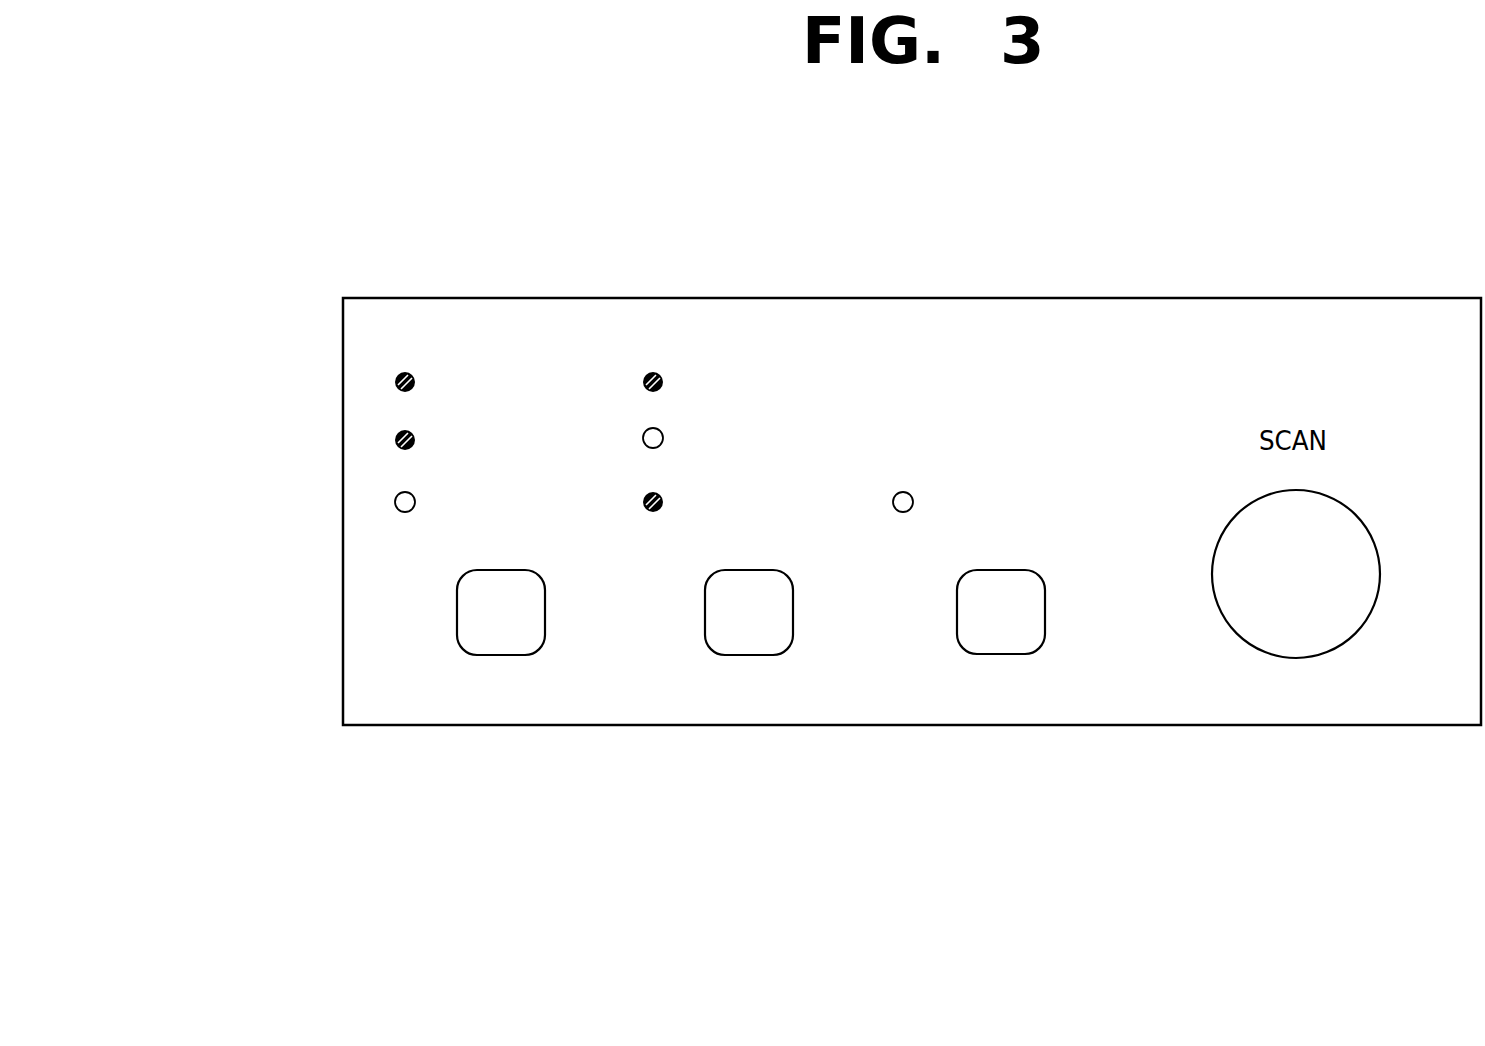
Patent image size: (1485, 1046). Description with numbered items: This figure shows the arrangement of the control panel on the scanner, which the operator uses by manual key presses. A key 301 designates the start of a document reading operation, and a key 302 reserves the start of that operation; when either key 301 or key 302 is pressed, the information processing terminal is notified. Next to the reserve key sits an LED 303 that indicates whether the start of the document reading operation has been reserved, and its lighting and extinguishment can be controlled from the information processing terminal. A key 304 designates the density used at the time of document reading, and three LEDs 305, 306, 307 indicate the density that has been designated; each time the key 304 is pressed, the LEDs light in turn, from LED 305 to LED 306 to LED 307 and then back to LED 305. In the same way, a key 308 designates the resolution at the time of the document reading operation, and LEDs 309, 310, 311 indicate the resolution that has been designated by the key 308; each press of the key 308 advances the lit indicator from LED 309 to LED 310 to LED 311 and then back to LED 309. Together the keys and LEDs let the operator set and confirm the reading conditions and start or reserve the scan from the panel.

The key 301 is at (1308, 656).
The key 302 is at (1003, 653).
The LED 303 is at (902, 490).
The key 304 is at (753, 655).
The LED 305 is at (645, 496).
The LED 306 is at (648, 430).
The LED 307 is at (653, 372).
The key 308 is at (505, 655).
The LED 309 is at (395, 502).
The LED 310 is at (395, 440).
The LED 311 is at (395, 382).